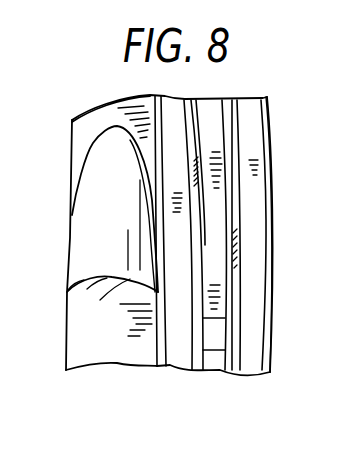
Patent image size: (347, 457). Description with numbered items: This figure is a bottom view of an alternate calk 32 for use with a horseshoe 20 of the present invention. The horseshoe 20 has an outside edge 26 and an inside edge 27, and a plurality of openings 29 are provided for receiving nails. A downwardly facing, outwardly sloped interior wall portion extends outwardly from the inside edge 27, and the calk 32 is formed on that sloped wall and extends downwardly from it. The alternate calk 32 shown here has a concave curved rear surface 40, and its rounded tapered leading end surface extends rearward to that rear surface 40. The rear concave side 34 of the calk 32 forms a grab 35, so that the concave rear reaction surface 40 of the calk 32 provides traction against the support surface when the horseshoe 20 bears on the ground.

The horseshoe 20 is at (258, 82).
The outside edge 26 is at (271, 303).
The inside edge 27 is at (72, 135).
The openings 29 is at (212, 337).
The calk 32 is at (100, 225).
The rear concave side 34 is at (100, 300).
The grab 35 is at (140, 298).
The concave curved rear surface 40 is at (87, 289).